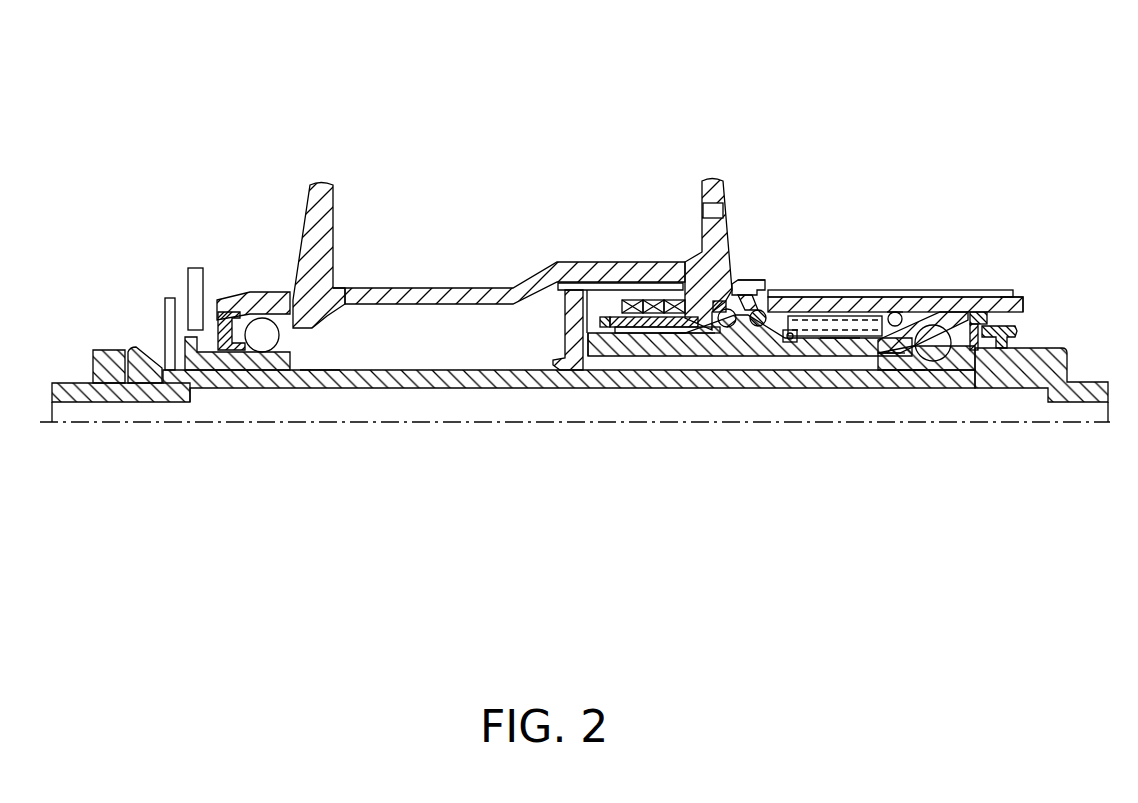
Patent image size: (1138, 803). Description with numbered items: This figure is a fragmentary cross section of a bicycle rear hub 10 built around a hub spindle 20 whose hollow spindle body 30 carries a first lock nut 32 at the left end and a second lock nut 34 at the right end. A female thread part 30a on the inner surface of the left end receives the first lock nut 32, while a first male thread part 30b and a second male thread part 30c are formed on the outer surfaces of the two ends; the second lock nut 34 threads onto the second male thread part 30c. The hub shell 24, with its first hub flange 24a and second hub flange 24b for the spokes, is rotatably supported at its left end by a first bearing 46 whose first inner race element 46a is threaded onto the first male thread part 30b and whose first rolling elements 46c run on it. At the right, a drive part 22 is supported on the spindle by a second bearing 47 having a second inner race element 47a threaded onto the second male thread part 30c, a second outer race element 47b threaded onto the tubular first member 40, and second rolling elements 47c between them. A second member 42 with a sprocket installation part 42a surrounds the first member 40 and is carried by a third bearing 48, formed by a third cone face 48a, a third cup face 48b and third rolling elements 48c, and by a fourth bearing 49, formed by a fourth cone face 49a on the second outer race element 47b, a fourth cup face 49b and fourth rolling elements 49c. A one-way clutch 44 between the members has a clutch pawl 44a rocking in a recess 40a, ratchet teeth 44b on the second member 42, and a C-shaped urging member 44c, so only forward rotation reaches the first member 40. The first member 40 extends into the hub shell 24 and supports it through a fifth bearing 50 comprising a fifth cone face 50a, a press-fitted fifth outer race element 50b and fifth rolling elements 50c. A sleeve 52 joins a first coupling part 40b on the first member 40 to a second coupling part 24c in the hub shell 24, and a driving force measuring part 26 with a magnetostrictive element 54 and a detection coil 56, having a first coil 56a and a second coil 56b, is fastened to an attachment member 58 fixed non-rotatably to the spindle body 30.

The bicycle rear hub 10 is at (505, 168).
The hub spindle 20 is at (480, 355).
The drive part 22 is at (838, 283).
The hub shell 24 is at (496, 277).
The first hub flange 24a is at (326, 180).
The second hub flange 24b is at (720, 178).
The second coupling part 24c is at (684, 262).
The driving force measuring part 26 is at (578, 300).
The spindle body 30 is at (546, 366).
The female thread part 30a is at (165, 400).
The first male thread part 30b is at (327, 365).
The second male thread part 30c is at (908, 372).
The first lock nut 32 is at (108, 350).
The second lock nut 34 is at (1045, 348).
The first member 40 is at (812, 354).
The recess 40a is at (840, 335).
The first coupling part 40b is at (592, 354).
The second member 42 is at (903, 289).
The sprocket installation part 42a is at (1000, 298).
The one-way clutch 44 is at (812, 325).
The clutch pawl 44a is at (835, 330).
The ratchet teeth 44b is at (838, 338).
The urging member 44c is at (790, 343).
The first bearing 46 is at (240, 300).
The first inner race element 46a is at (262, 340).
The first rolling elements 46c is at (275, 305).
The second bearing 47 is at (1005, 348).
The second inner race element 47a is at (950, 350).
The second outer race element 47b is at (910, 362).
The second rolling elements 47c is at (885, 345).
The third bearing 48 is at (762, 292).
The third cone face 48a is at (760, 327).
The third cup face 48b is at (770, 320).
The third rolling elements 48c is at (748, 280).
The fourth bearing 49 is at (905, 335).
The fourth cone face 49a is at (885, 345).
The fourth cup face 49b is at (897, 322).
The fourth rolling elements 49c is at (955, 312).
The fifth bearing 50 is at (720, 309).
The fifth cone face 50a is at (728, 335).
The fifth outer race element 50b is at (678, 338).
The fifth rolling elements 50c is at (700, 330).
The sleeve 52 is at (712, 300).
The magnetostrictive element 54 is at (640, 300).
The detection coil 56 is at (642, 328).
The first coil 56a is at (616, 327).
The second coil 56b is at (630, 316).
The attachment member 58 is at (560, 295).